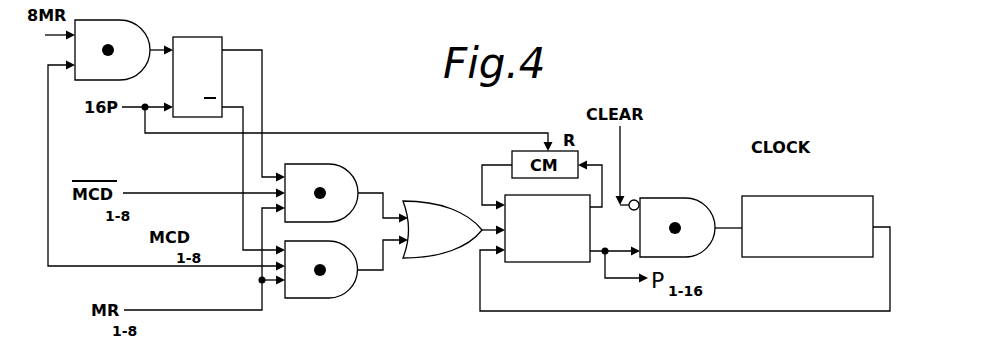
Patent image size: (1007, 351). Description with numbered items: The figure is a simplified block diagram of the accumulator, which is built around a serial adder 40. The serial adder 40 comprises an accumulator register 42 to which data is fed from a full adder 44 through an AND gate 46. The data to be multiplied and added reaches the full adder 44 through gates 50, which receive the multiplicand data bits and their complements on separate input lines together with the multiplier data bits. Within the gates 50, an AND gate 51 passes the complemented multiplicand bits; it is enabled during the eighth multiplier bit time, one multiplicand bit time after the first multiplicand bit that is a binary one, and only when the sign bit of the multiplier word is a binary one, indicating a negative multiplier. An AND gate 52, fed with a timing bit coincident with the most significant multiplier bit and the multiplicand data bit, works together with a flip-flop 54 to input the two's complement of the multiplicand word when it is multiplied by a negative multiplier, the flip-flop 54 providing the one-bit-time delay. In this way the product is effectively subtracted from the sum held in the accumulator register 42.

The AND gate 52 is at (130, 22).
The flip-flop 54 is at (203, 37).
The AND gate 51 is at (342, 219).
The gates 50 is at (441, 170).
The full adder 44 is at (545, 262).
The serial adder 40 is at (692, 217).
The AND gate 46 is at (705, 250).
The accumulator register 42 is at (811, 257).